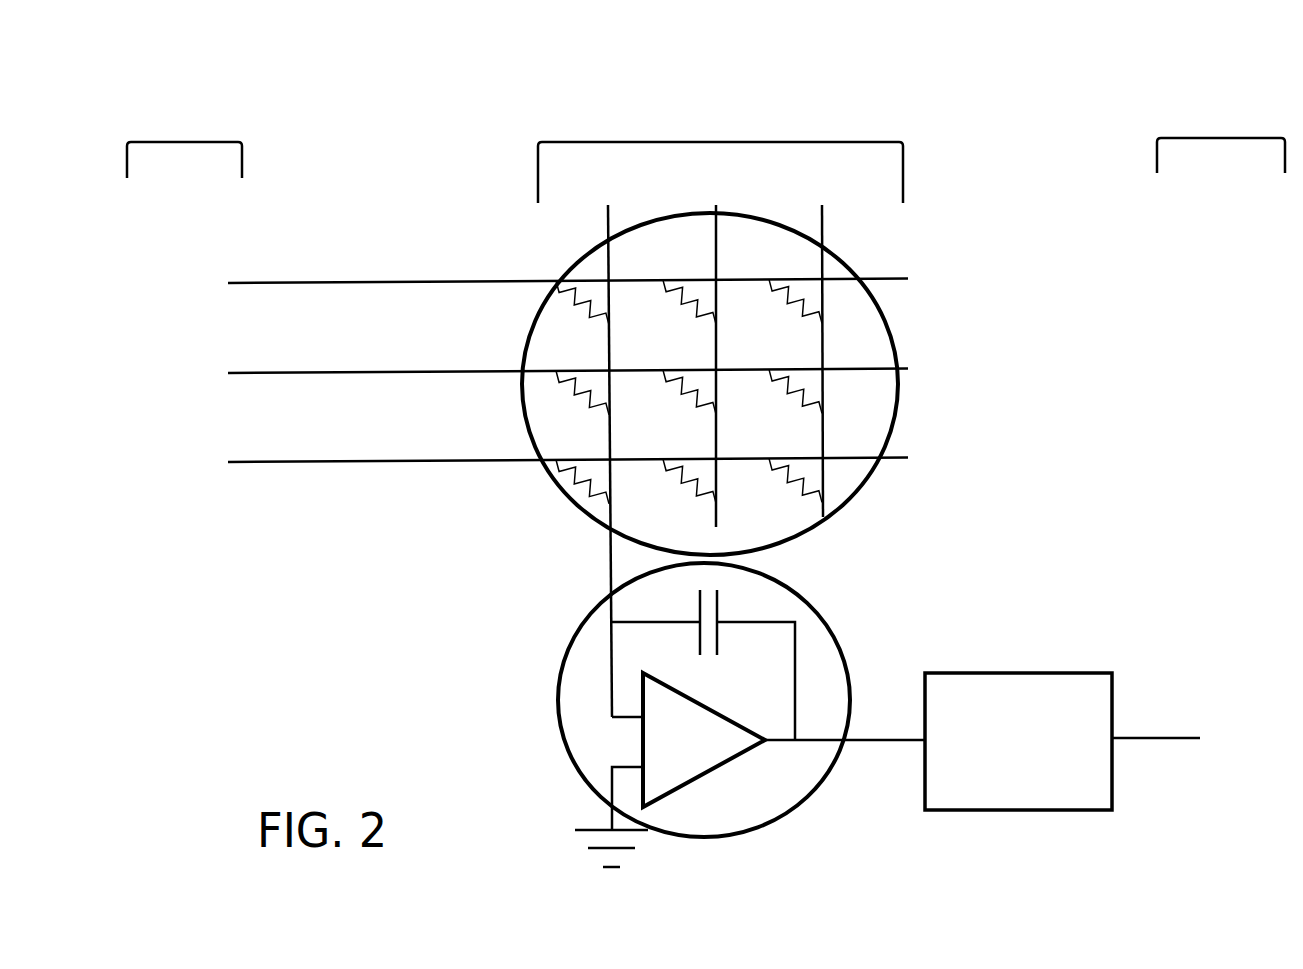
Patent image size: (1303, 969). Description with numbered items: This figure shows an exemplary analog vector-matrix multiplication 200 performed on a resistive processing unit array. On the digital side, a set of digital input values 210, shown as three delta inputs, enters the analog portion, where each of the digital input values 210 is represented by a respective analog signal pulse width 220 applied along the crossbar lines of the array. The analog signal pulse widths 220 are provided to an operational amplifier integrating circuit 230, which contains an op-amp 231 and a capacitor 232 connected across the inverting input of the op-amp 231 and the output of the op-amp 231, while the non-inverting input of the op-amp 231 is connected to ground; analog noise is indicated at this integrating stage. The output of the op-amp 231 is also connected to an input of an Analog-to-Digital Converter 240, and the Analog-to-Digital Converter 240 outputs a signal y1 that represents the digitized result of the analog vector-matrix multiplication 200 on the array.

The analog vector-matrix multiplication 200 is at (218, 66).
The digital input values 210 is at (186, 538).
The analog signal pulse width 220 is at (497, 149).
The operational amplifier integrating circuit 230 is at (679, 701).
The op-amp 231 is at (722, 752).
The capacitor 232 is at (703, 665).
The Analog-to-Digital Converter 240 is at (1038, 791).